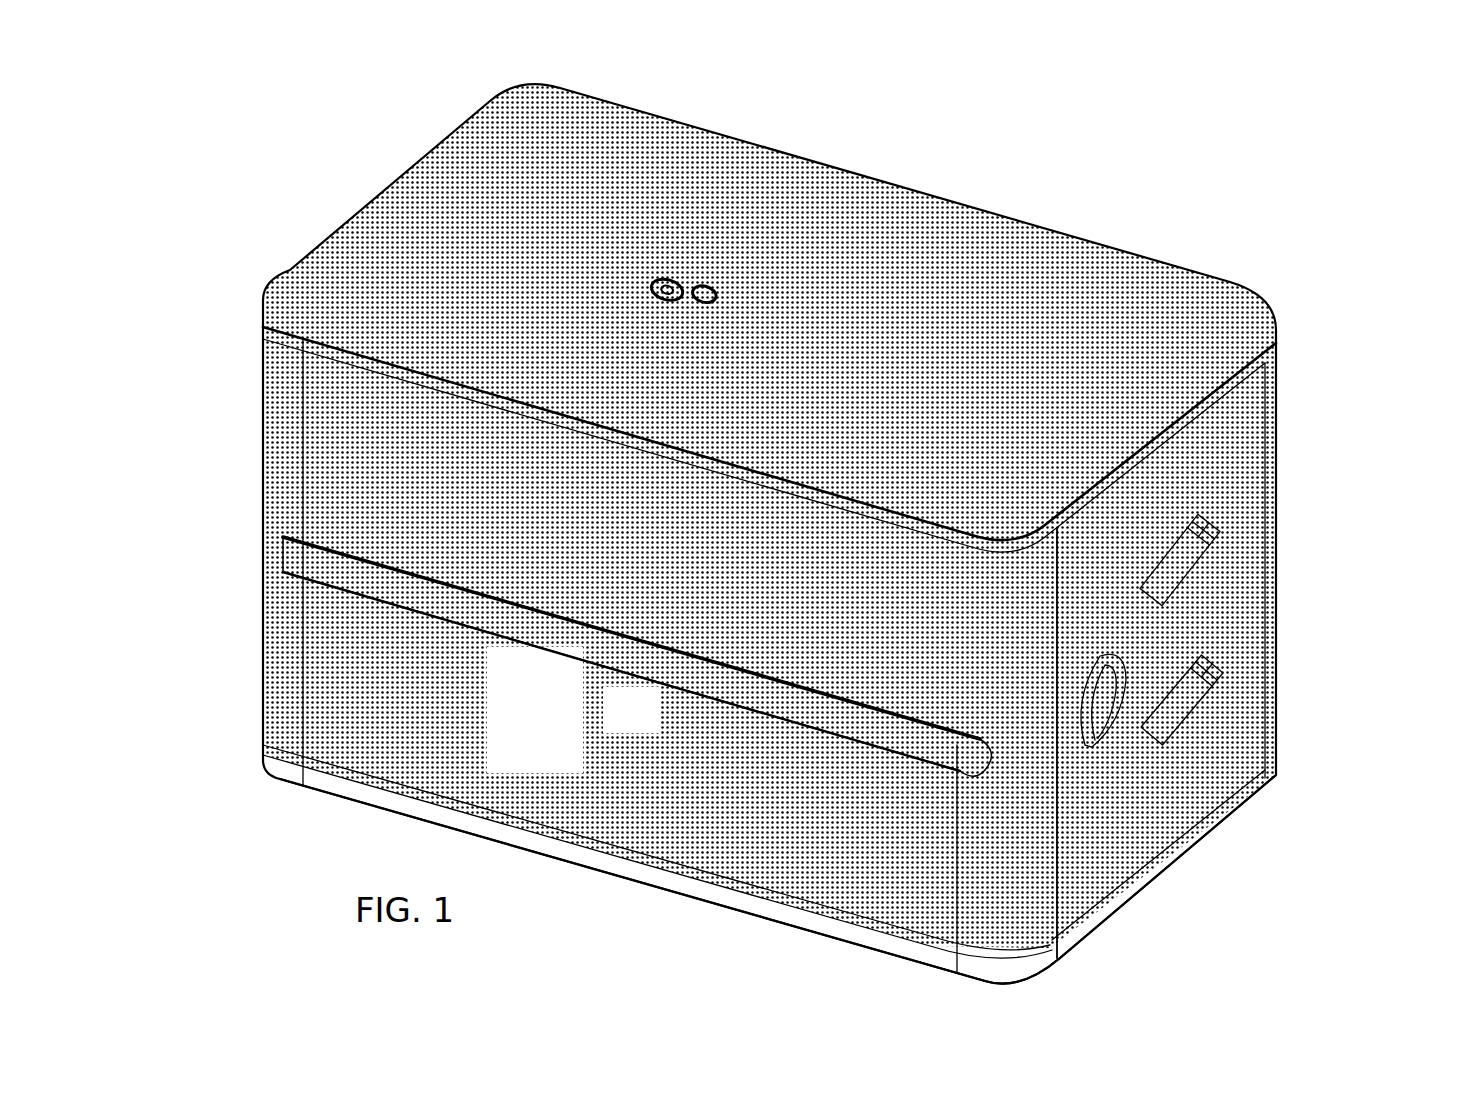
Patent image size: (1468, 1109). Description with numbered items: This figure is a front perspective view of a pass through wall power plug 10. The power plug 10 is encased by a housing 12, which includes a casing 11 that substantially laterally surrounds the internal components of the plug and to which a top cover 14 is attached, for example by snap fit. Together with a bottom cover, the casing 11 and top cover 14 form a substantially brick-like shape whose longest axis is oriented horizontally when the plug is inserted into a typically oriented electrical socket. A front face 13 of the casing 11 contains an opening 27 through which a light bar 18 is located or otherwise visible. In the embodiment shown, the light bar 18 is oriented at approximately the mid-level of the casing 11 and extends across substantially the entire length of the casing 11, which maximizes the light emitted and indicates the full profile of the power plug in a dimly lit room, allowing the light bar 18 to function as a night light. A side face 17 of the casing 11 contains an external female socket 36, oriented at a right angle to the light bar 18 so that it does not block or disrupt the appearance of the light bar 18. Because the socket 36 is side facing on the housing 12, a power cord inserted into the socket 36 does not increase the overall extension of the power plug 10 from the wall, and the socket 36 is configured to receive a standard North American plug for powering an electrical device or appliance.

The pass through wall power plug 10 is at (912, 143).
The casing 11 is at (363, 753).
The housing 12 is at (1150, 898).
The front face 13 is at (340, 437).
The top cover 14 is at (1158, 282).
The side face 17 is at (1228, 467).
The light bar 18 is at (297, 560).
The opening 27 is at (325, 593).
The external female socket 36 is at (1173, 693).